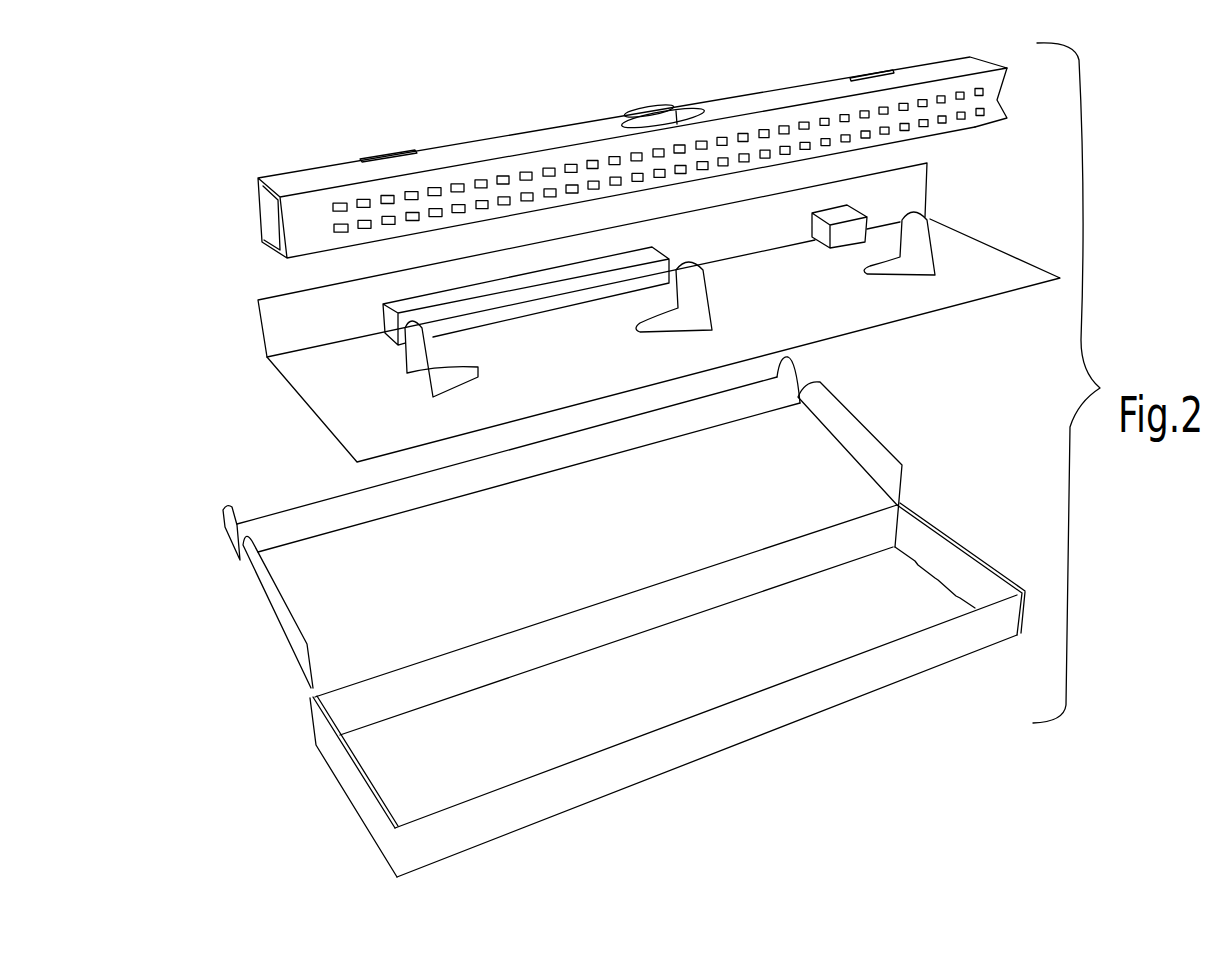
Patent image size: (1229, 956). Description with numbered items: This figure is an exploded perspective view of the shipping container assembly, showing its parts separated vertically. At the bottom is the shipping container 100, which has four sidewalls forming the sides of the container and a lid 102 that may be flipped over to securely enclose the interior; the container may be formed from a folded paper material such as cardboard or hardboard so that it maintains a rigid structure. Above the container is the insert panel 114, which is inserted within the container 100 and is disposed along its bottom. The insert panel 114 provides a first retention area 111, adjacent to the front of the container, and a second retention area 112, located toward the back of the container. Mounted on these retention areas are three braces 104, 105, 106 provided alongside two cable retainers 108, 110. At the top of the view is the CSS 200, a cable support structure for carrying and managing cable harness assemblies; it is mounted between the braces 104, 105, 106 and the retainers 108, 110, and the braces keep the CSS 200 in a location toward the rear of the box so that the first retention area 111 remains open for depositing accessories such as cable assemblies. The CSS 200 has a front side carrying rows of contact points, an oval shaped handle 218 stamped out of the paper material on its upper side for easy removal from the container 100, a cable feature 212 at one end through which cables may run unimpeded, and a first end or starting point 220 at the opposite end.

The shipping container 100 is at (310, 788).
The lid 102 is at (595, 557).
The brace 104 is at (413, 357).
The brace 105 is at (703, 297).
The brace 106 is at (933, 240).
The cable retainer 108 is at (383, 296).
The cable retainer 110 is at (830, 207).
The first retention area 111 is at (575, 402).
The second retention area 112 is at (806, 269).
The insert panel 114 is at (318, 449).
The CSS 200 is at (313, 143).
The cable feature 212 is at (1018, 83).
The handle 218 is at (693, 104).
The first end 220 is at (242, 214).